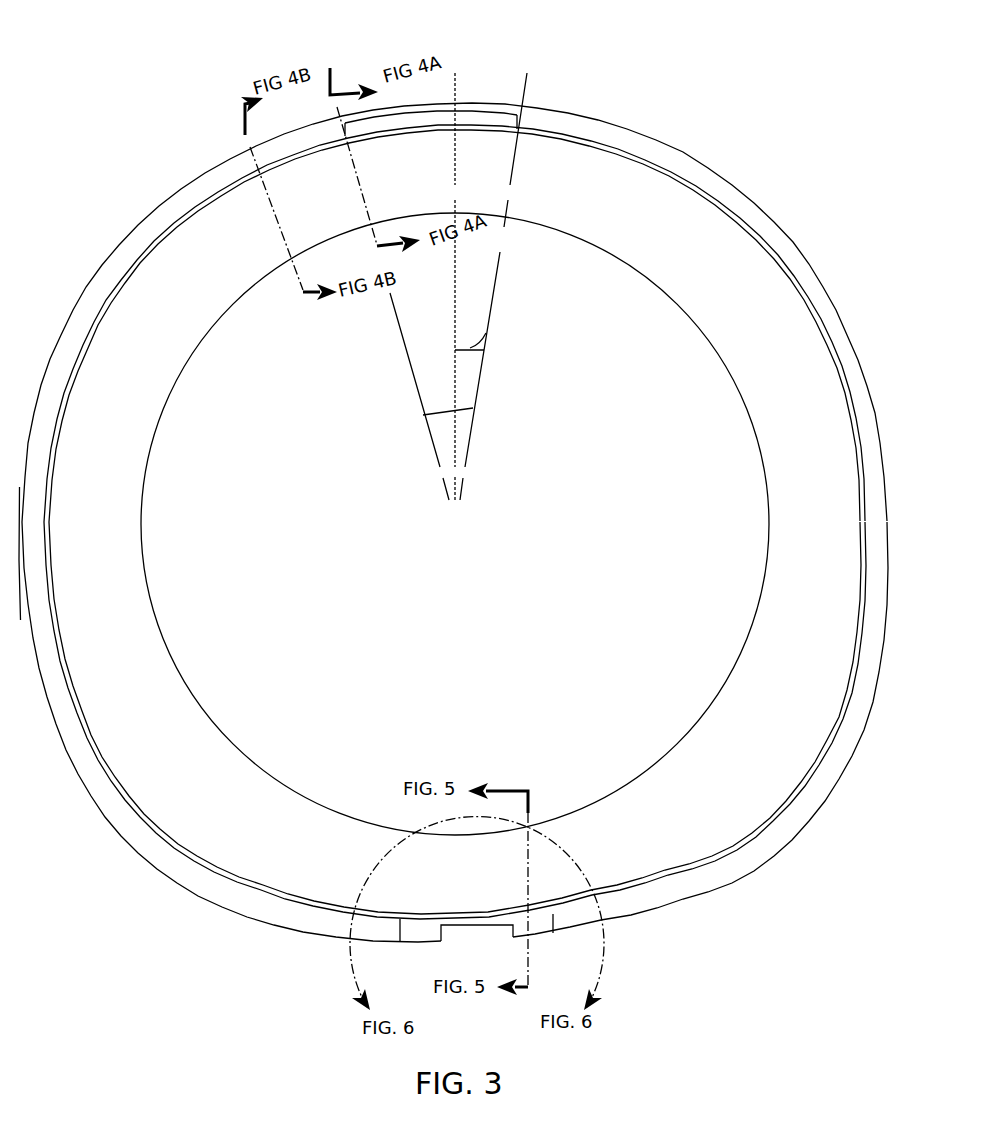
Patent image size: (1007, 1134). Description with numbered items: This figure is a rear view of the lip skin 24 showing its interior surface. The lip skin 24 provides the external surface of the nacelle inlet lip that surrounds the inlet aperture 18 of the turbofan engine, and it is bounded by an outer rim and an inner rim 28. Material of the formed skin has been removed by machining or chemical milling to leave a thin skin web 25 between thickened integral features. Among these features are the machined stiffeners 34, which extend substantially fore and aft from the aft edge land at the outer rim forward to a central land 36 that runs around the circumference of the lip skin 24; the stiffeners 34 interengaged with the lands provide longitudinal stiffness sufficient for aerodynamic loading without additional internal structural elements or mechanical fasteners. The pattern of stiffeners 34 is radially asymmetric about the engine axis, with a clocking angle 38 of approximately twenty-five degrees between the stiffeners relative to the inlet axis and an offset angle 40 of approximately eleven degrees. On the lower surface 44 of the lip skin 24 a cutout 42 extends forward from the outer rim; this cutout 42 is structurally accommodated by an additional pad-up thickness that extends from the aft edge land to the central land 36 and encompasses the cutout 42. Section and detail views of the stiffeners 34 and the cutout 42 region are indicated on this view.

The inlet aperture 18 is at (478, 533).
The lip skin 24 is at (747, 870).
The skin web 25 is at (703, 831).
The inner rim 28 is at (769, 524).
The machined stiffeners 34 is at (353, 137).
The central land 36 is at (125, 272).
The clocking angle 38 is at (440, 397).
The offset angle 40 is at (486, 333).
The cutout 42 is at (470, 925).
The lower surface 44 is at (383, 941).